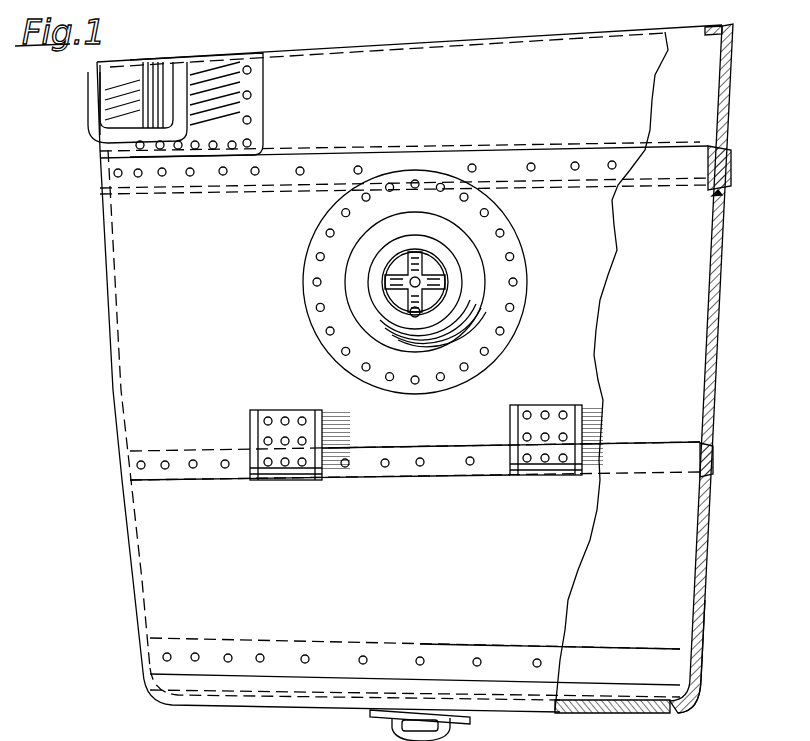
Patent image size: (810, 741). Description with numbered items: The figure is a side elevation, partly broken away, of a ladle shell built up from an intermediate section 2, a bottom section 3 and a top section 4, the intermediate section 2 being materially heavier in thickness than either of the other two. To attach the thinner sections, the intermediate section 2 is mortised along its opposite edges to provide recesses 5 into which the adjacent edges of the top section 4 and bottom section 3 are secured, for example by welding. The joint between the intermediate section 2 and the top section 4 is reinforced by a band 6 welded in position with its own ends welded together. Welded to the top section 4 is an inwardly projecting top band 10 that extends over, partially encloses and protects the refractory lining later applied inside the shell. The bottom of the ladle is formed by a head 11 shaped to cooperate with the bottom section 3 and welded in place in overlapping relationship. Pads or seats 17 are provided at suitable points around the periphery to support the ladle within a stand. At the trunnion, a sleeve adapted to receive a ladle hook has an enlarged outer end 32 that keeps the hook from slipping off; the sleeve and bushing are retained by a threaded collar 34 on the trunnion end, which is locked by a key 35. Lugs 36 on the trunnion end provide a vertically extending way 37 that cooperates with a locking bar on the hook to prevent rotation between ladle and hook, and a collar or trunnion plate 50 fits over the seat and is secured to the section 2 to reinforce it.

The intermediate section 2 is at (716, 336).
The bottom section 3 is at (701, 554).
The top section 4 is at (729, 112).
The recesses 5 is at (731, 163).
The band 6 is at (722, 195).
The top band 10 is at (722, 26).
The head 11 is at (684, 706).
The pads or seats 17 is at (285, 420).
The enlarged outer end 32 is at (458, 243).
The threaded collar 34 is at (455, 277).
The key 35 is at (420, 315).
The lugs 36 is at (397, 257).
The way 37 is at (385, 275).
The trunnion plate 50 is at (306, 297).